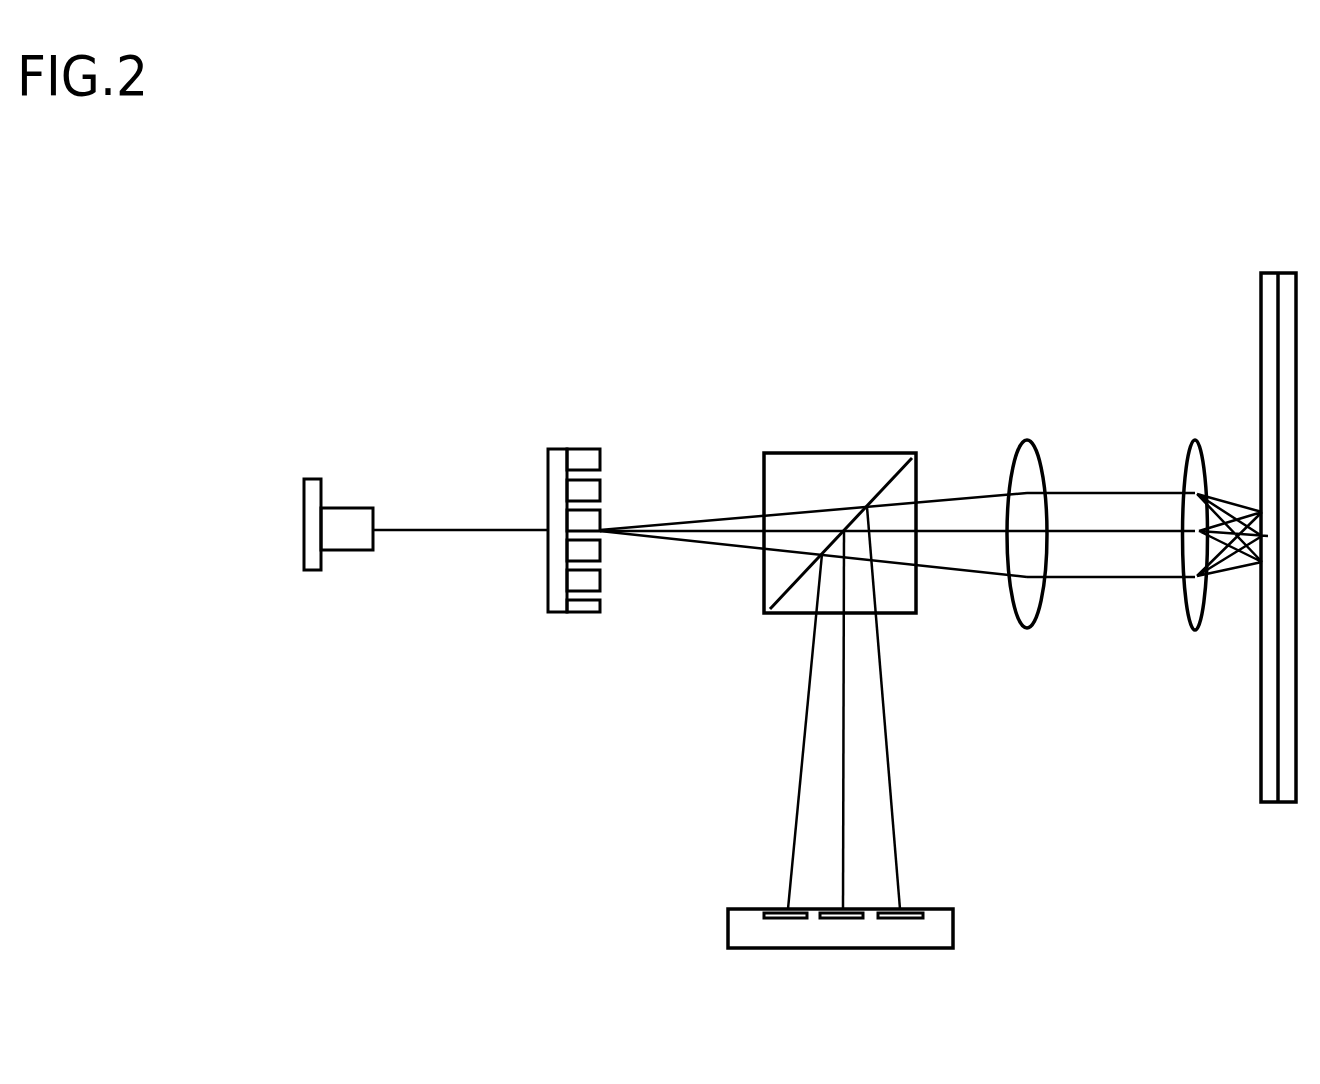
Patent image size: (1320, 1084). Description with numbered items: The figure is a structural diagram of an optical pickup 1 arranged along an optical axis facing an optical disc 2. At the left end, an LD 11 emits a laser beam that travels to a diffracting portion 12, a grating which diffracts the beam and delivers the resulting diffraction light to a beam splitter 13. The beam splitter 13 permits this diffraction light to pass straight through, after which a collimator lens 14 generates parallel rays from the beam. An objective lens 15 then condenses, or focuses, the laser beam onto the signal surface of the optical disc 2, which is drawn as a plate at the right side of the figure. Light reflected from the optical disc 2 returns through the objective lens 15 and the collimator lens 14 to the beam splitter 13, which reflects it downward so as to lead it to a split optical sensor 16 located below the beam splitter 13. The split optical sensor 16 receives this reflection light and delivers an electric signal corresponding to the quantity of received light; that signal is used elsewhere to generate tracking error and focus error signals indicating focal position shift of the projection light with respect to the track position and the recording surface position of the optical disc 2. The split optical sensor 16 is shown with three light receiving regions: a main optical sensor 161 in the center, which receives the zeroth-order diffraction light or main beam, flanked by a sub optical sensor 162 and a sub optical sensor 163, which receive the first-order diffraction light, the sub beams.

The optical pickup 1 is at (966, 321).
The optical disc 2 is at (1260, 730).
The LD 11 is at (347, 520).
The diffracting portion 12 is at (583, 448).
The beam splitter 13 is at (835, 452).
The collimator lens 14 is at (1026, 440).
The objective lens 15 is at (1195, 440).
The split optical sensor 16 is at (879, 860).
The main optical sensor 161 is at (838, 907).
The sub optical sensor 162 is at (776, 909).
The sub optical sensor 163 is at (913, 909).